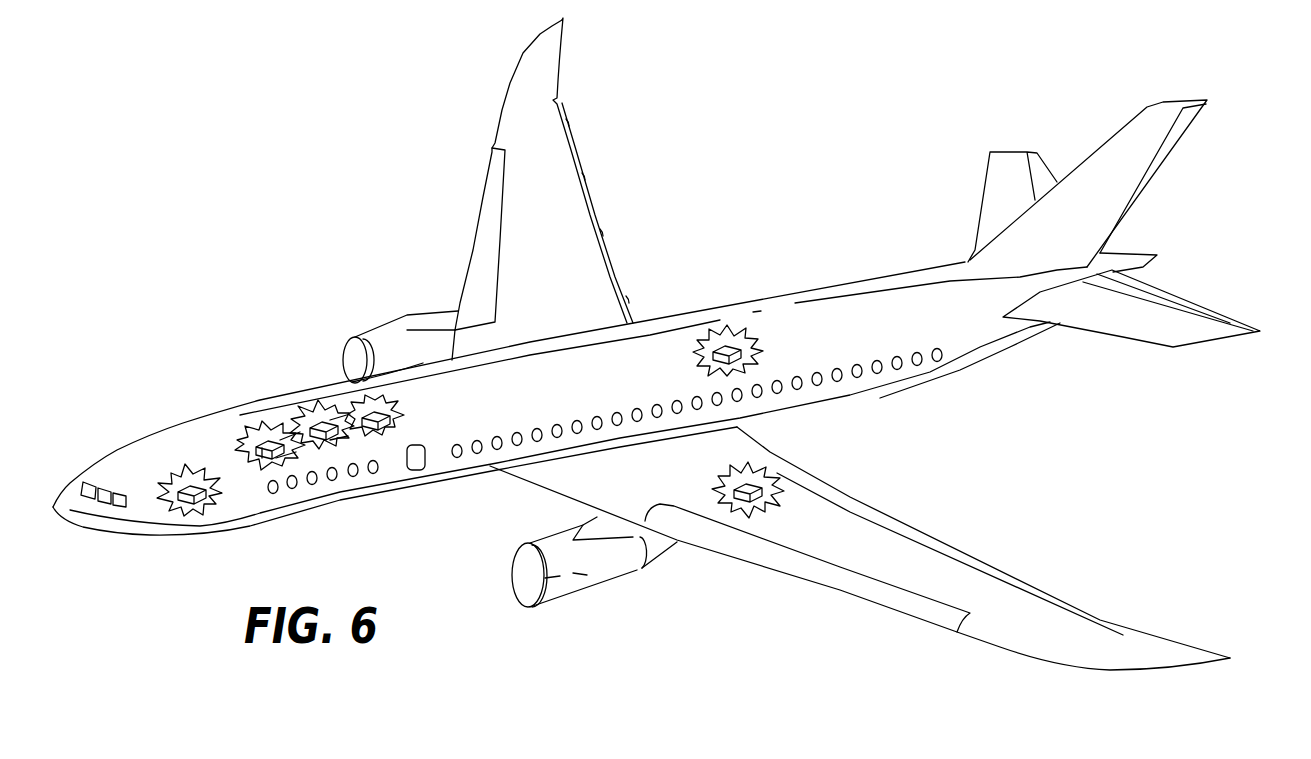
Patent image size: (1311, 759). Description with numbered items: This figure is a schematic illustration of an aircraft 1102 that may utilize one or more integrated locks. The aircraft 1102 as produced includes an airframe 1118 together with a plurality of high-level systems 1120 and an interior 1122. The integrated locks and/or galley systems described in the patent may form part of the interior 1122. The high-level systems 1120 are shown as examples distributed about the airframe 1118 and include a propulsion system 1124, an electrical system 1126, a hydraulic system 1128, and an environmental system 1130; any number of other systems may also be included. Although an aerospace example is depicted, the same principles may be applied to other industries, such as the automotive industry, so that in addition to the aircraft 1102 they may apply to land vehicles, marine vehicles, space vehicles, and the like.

The aircraft 1102 is at (335, 200).
The airframe 1118 is at (308, 370).
The high-level systems 1120 is at (1135, 502).
The interior 1122 is at (310, 443).
The propulsion system 1124 is at (385, 323).
The electrical system 1126 is at (188, 474).
The hydraulic system 1128 is at (757, 478).
The environmental system 1130 is at (724, 340).